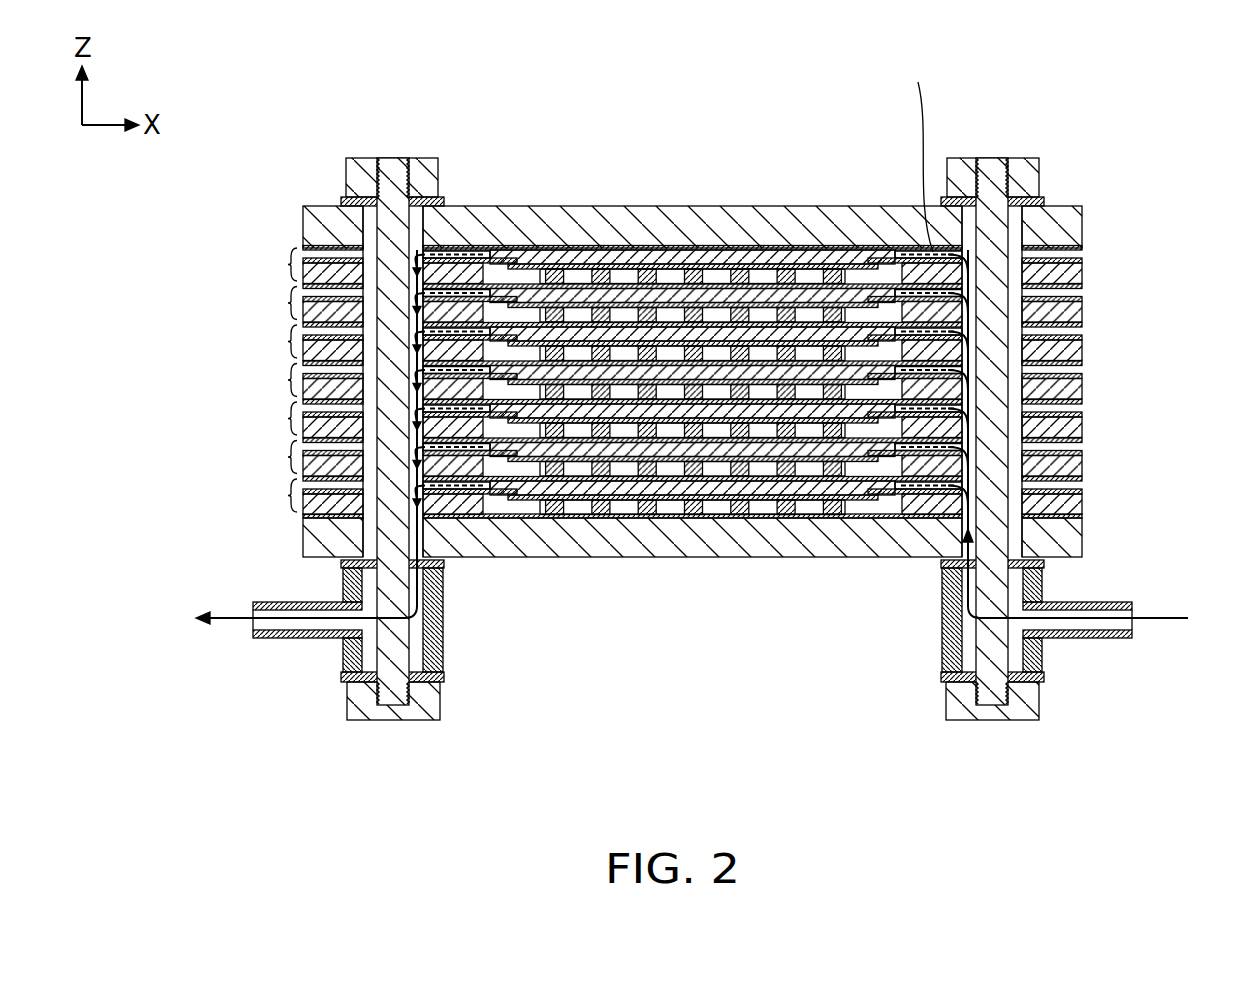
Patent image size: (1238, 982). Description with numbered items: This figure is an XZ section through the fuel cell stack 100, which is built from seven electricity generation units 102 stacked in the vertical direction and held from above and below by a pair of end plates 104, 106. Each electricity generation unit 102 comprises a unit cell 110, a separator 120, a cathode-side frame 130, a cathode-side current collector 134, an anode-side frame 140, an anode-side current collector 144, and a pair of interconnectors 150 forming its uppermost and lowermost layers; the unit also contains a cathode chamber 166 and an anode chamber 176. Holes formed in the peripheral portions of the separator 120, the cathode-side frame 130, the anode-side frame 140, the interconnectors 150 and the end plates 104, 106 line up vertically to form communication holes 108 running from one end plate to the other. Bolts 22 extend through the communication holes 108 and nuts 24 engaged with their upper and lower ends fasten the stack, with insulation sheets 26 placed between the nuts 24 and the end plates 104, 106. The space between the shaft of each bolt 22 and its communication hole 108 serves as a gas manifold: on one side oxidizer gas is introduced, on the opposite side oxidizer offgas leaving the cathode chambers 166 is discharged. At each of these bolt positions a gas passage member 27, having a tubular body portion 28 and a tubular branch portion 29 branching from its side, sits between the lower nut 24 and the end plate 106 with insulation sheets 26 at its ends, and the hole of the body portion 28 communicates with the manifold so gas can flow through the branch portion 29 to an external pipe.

The fuel cell stack 100 is at (1131, 303).
The electricity generation unit 102 is at (626, 315).
The end plate 104 is at (308, 240).
The end plate 106 is at (305, 530).
The communication hole 108 is at (380, 228).
The unit cell 110 is at (722, 265).
The separator 120 is at (495, 260).
The cathode-side frame 130 is at (445, 252).
The cathode-side current collector 134 is at (780, 257).
The anode-side frame 140 is at (470, 262).
The anode-side current collector 144 is at (687, 267).
The interconnector 150 is at (530, 257).
The cathode chamber 166 is at (877, 260).
The anode chamber 176 is at (853, 267).
The bolt 22 is at (364, 212).
The nut 24 is at (347, 160).
The insulation sheet 26 is at (341, 200).
The gas passage member 27 is at (693, 665).
The body portion 28 is at (345, 655).
The branch portion 29 is at (318, 720).